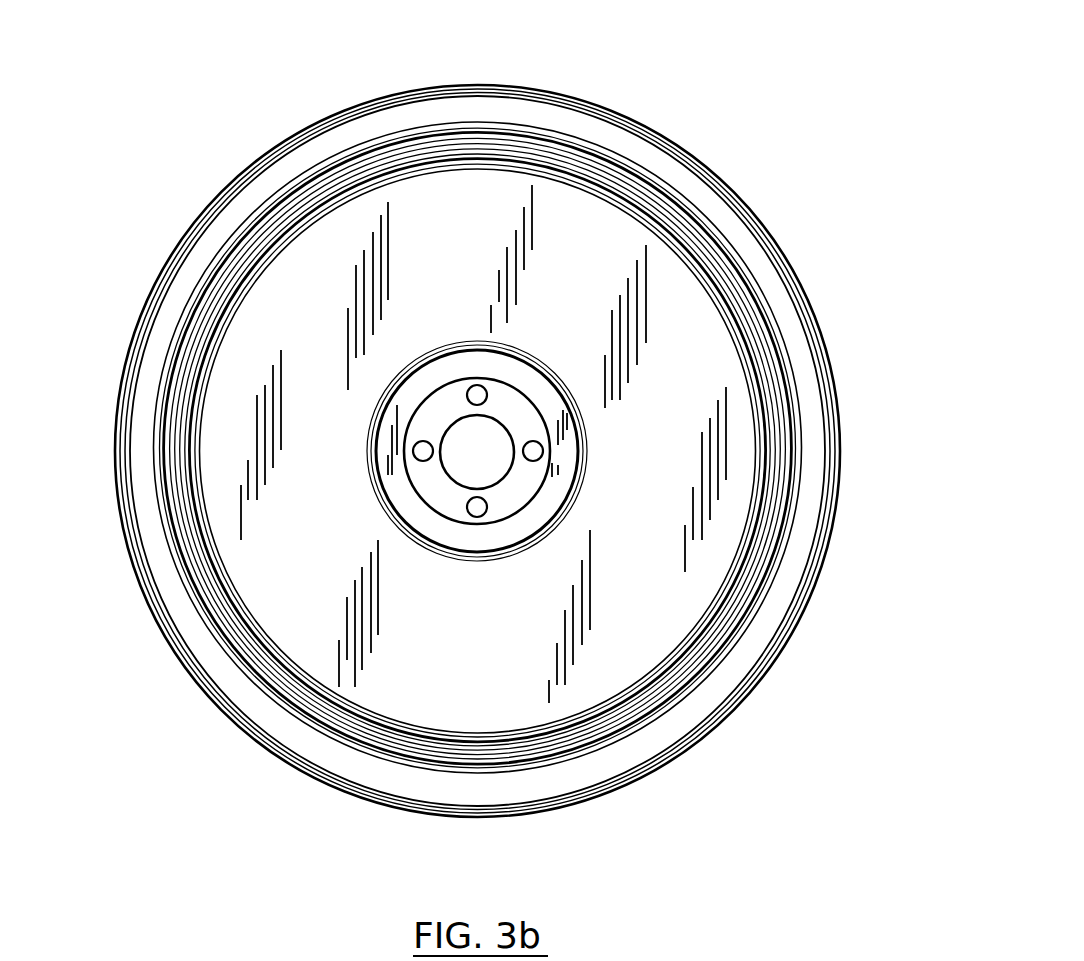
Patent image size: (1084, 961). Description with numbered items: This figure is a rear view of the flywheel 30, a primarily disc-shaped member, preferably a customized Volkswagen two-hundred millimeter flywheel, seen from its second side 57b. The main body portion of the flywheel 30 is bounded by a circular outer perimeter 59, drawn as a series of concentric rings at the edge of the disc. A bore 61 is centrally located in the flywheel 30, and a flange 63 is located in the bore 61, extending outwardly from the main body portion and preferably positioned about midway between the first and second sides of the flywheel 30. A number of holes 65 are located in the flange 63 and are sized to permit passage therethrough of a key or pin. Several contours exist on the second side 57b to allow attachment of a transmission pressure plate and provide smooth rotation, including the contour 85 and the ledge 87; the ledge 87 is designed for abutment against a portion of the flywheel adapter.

The flywheel 30 is at (506, 447).
The outer perimeter 59 is at (838, 513).
The contour 85 is at (188, 543).
The second side 57b is at (408, 703).
The ledge 87 is at (403, 507).
The flange 63 is at (517, 408).
The holes 65 is at (540, 452).
The bore 61 is at (466, 434).